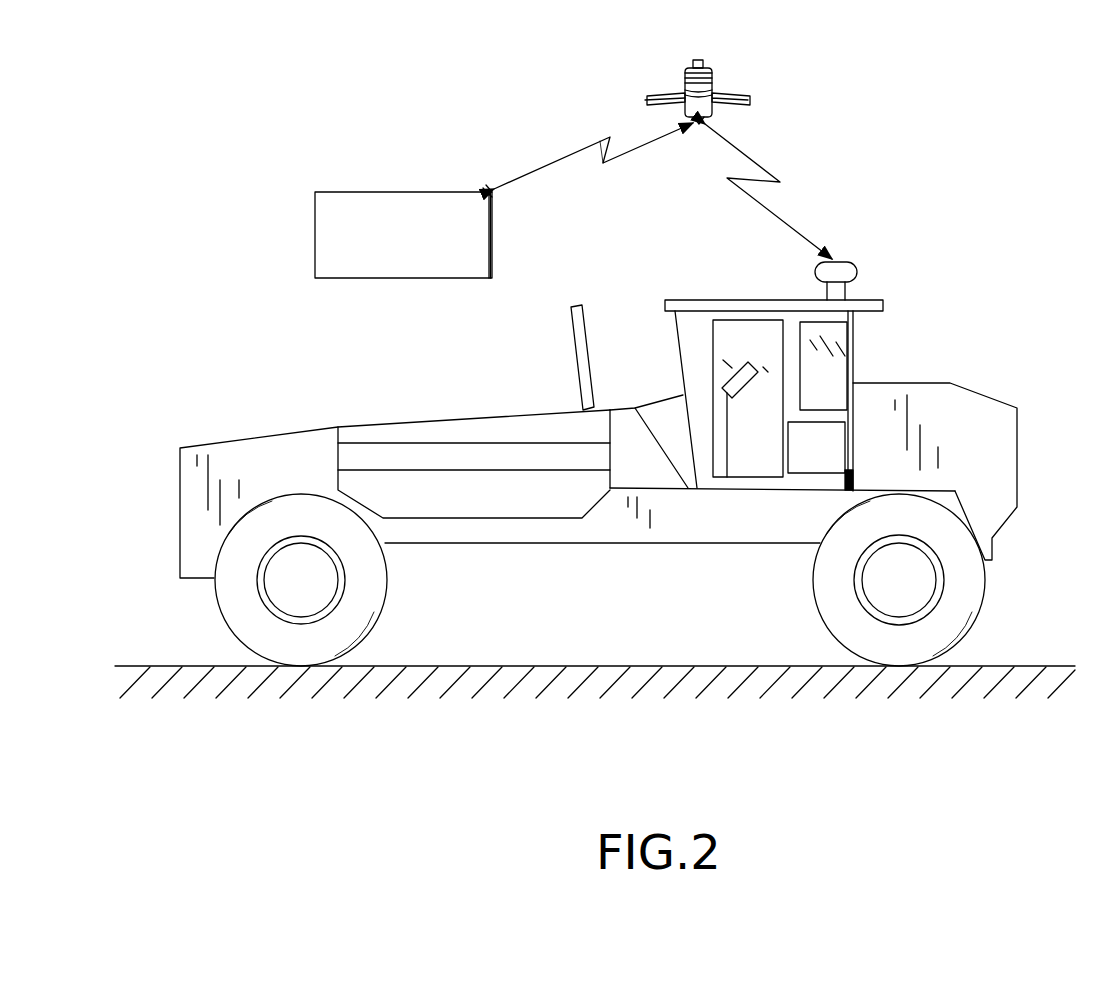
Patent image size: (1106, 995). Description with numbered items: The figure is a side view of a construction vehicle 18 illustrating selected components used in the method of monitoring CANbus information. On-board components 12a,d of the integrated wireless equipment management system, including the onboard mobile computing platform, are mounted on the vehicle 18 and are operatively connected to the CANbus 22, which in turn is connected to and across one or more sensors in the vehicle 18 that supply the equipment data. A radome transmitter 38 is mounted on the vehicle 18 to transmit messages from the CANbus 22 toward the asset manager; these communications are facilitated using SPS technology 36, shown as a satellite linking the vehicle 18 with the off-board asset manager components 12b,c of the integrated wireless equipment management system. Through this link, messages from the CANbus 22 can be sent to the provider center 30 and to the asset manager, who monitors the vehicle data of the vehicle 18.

The integrated wireless equipment management system components 12b,c is at (493, 242).
The SPS technology 36 is at (717, 83).
The radome transmitter 38 is at (858, 263).
The vehicle 18 is at (993, 397).
The CANbus 22 is at (718, 480).
The provider center 30 is at (748, 384).
The onboard integrated wireless equipment management system components 12a,d is at (804, 478).